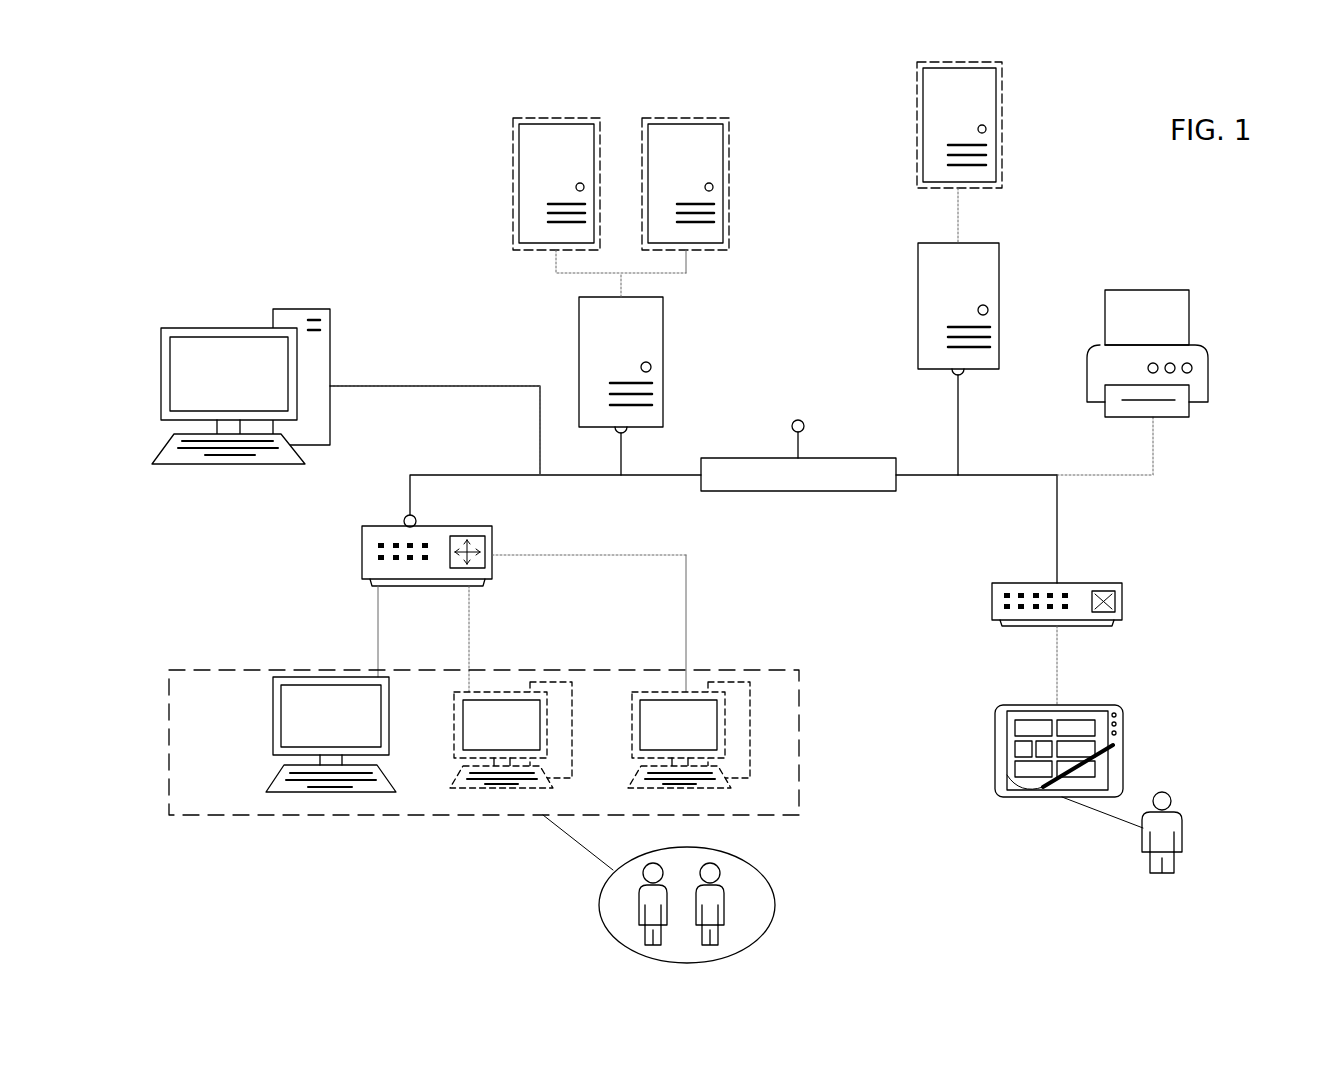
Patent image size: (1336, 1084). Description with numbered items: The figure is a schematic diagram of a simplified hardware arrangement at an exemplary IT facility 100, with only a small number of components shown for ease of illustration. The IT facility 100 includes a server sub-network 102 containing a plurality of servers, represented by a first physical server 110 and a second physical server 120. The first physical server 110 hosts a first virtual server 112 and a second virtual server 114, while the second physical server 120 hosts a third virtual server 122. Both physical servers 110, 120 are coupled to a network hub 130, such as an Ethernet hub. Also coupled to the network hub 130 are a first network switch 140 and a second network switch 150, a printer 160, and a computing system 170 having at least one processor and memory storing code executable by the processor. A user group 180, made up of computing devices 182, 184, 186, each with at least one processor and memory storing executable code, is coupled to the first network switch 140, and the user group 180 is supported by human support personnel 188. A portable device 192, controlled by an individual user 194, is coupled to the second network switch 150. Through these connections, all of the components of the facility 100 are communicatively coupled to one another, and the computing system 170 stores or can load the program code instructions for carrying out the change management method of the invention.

The IT facility 100 is at (330, 93).
The server sub-network 102 is at (815, 84).
The first physical server 110 is at (579, 362).
The first virtual server 112 is at (513, 166).
The second virtual server 114 is at (729, 183).
The second physical server 120 is at (999, 275).
The third virtual server 122 is at (1002, 148).
The network hub 130 is at (848, 492).
The first network switch 140 is at (362, 556).
The second network switch 150 is at (1122, 602).
The printer 160 is at (1208, 370).
The computing system 170 is at (200, 328).
The user group 180 is at (200, 668).
The computing device 182 is at (273, 717).
The computing device 184 is at (454, 745).
The computing device 186 is at (632, 745).
The human support personnel 188 is at (815, 897).
The portable device 192 is at (1125, 750).
The individual user 194 is at (1185, 830).